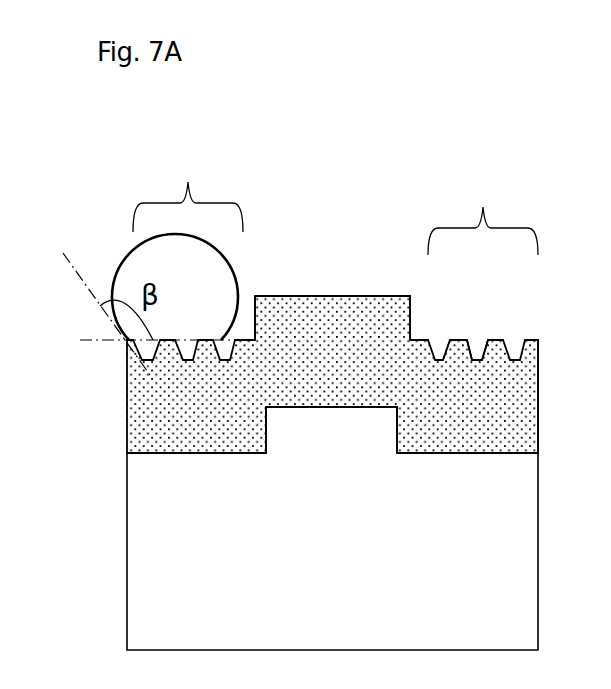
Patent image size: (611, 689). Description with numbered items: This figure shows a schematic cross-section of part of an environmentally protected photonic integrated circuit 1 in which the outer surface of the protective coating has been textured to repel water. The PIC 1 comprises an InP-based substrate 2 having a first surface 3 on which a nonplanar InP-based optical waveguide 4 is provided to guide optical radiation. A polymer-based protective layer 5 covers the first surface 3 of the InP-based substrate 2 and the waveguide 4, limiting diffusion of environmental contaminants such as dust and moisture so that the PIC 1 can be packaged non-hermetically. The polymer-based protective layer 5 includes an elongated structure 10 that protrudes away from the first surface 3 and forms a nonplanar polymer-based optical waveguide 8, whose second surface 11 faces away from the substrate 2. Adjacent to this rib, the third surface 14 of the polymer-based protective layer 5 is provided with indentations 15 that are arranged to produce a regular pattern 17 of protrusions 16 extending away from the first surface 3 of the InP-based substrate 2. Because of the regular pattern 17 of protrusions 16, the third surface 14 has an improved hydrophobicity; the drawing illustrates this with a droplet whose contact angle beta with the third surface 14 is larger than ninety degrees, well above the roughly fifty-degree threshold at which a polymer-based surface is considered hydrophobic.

The environmentally protected photonic integrated circuit 1 is at (392, 122).
The InP-based substrate 2 is at (510, 565).
The first surface 3 is at (503, 448).
The nonplanar InP-based optical waveguide 4 is at (407, 433).
The polymer-based protective layer 5 is at (517, 385).
The nonplanar polymer-based optical waveguide 8 is at (370, 270).
The elongated structure 10 is at (256, 320).
The second surface 11 is at (323, 296).
The third surface 14 is at (460, 338).
The indentations 15 is at (478, 350).
The protrusions 16 is at (497, 345).
The regular pattern 17 is at (335, 199).